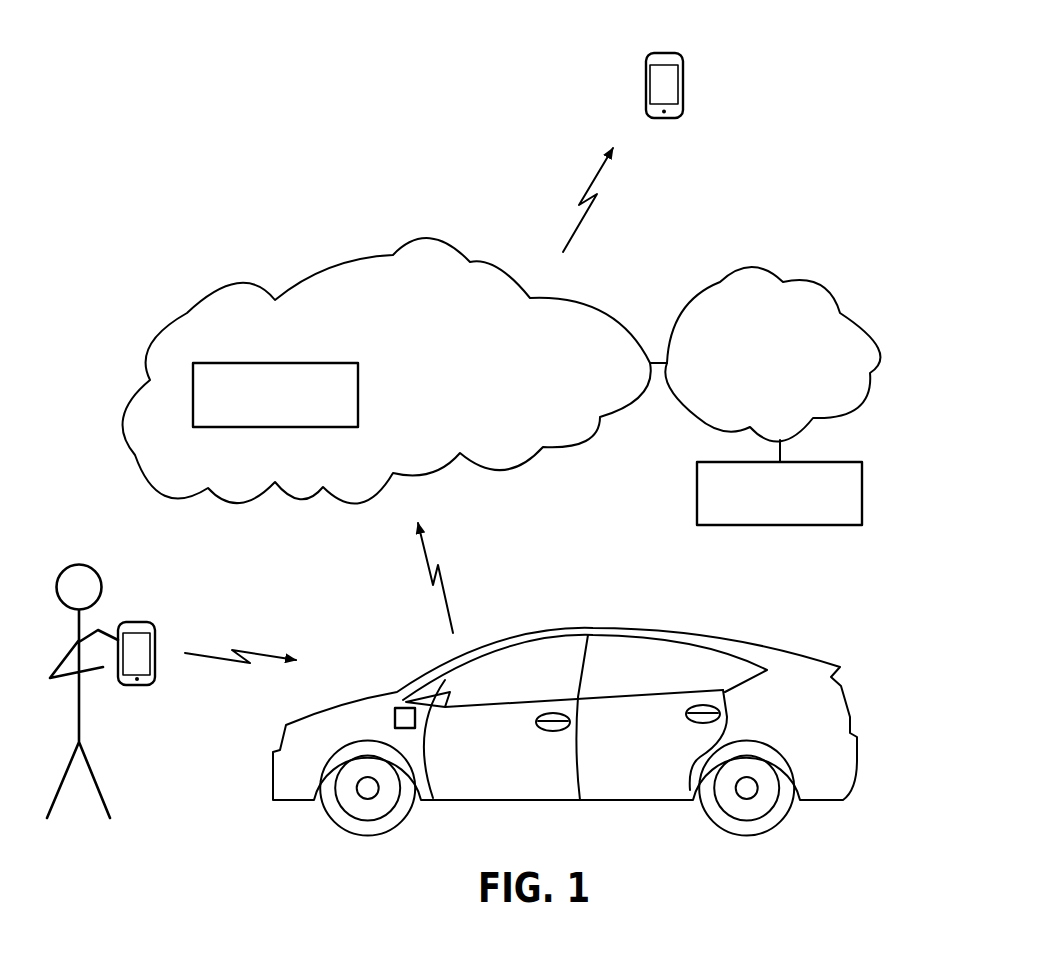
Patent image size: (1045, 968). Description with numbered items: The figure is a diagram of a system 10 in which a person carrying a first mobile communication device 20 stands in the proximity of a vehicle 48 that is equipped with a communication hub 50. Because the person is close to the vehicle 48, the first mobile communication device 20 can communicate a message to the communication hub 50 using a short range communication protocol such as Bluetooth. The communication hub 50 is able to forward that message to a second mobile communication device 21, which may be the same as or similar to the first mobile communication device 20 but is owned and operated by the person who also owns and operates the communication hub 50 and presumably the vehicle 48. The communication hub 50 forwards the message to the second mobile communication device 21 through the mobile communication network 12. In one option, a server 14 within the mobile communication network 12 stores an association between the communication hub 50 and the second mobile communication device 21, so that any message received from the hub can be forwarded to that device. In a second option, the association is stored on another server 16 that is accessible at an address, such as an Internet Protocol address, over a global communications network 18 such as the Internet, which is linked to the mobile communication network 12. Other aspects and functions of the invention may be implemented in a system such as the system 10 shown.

The system 10 is at (272, 114).
The mobile communication network 12 is at (420, 233).
The server 14 is at (358, 410).
The server 16 is at (862, 473).
The global communications network 18 is at (767, 262).
The first mobile communication device 20 is at (137, 628).
The second mobile communication device 21 is at (663, 58).
The vehicle 48 is at (603, 628).
The communication hub 50 is at (405, 717).